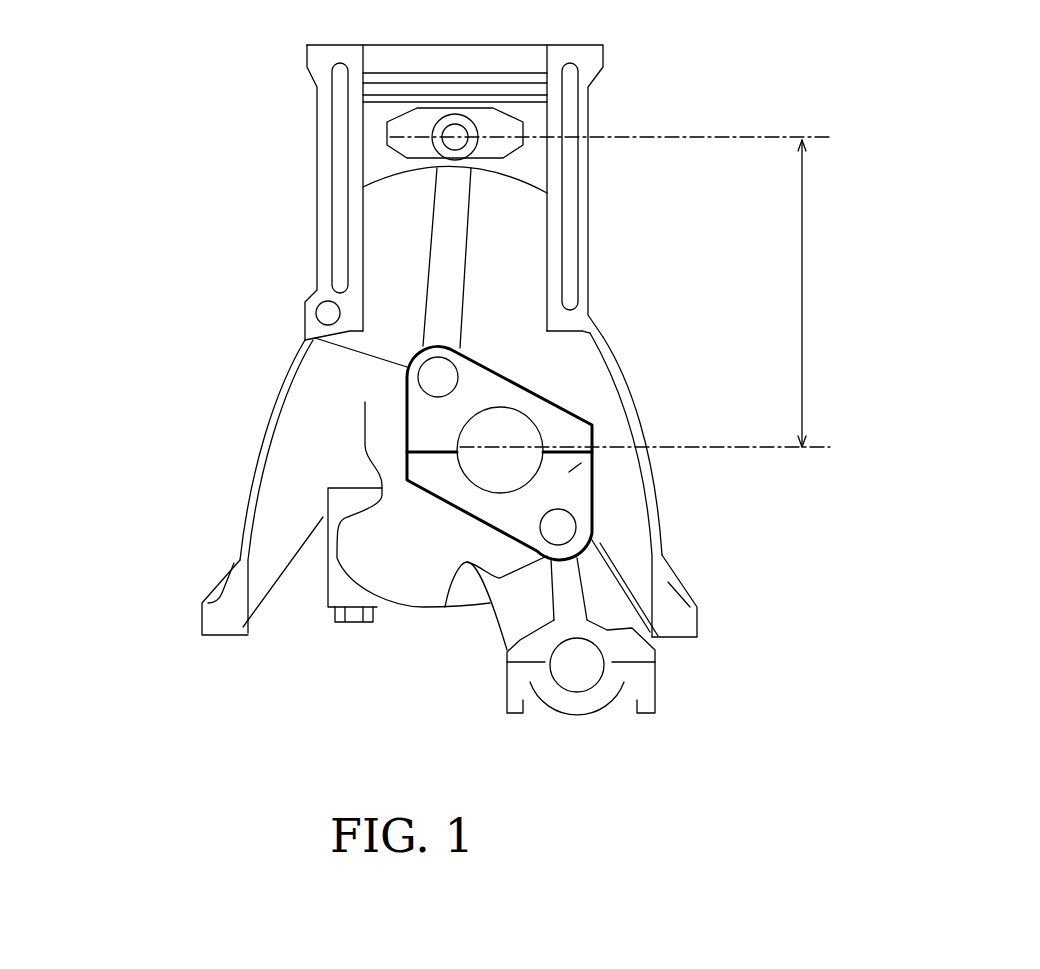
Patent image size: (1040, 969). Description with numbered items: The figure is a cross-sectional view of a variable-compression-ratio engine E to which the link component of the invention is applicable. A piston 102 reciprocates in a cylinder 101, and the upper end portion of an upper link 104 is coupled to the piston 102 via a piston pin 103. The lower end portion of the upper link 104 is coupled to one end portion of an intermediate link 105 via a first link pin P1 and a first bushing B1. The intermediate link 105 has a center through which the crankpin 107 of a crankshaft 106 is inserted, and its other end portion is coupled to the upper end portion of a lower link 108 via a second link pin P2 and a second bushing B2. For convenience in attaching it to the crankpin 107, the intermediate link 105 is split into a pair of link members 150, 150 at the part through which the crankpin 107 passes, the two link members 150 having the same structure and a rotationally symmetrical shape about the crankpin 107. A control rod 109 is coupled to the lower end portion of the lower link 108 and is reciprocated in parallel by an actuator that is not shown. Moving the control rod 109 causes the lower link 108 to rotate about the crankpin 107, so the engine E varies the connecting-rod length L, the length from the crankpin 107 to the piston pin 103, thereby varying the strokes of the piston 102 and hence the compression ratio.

The variable-compression-ratio engine E is at (615, 160).
The cylinder 101 is at (507, 252).
The piston 102 is at (377, 157).
The piston pin 103 is at (452, 128).
The upper link 104 is at (450, 275).
The intermediate link 105 is at (915, 357).
The link member 150 is at (530, 387).
The crankshaft 106 is at (378, 510).
The crankpin 107 is at (503, 473).
The lower link 108 is at (570, 605).
The control rod 109 is at (580, 667).
The first link pin P1 is at (433, 377).
The second link pin P2 is at (550, 533).
The first bushing B1 is at (302, 334).
The second bushing B2 is at (575, 517).
The connecting-rod length L is at (615, 292).